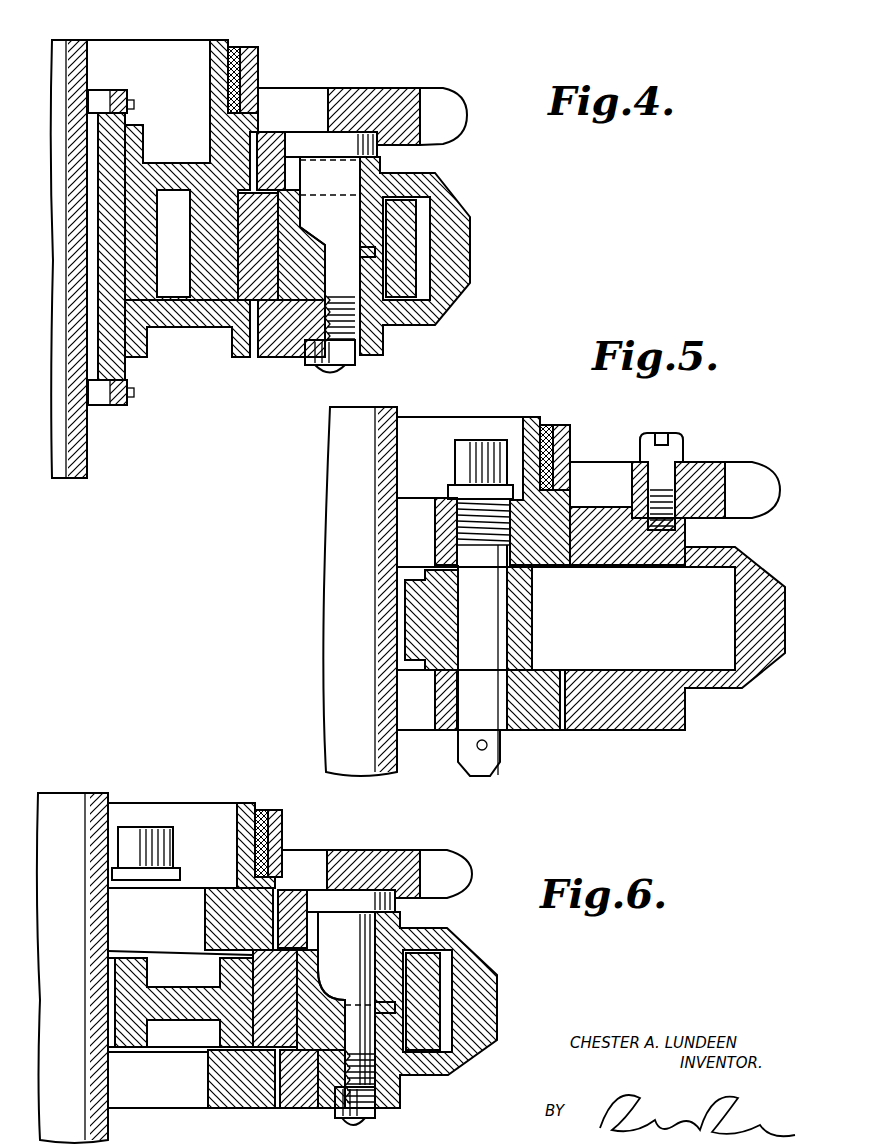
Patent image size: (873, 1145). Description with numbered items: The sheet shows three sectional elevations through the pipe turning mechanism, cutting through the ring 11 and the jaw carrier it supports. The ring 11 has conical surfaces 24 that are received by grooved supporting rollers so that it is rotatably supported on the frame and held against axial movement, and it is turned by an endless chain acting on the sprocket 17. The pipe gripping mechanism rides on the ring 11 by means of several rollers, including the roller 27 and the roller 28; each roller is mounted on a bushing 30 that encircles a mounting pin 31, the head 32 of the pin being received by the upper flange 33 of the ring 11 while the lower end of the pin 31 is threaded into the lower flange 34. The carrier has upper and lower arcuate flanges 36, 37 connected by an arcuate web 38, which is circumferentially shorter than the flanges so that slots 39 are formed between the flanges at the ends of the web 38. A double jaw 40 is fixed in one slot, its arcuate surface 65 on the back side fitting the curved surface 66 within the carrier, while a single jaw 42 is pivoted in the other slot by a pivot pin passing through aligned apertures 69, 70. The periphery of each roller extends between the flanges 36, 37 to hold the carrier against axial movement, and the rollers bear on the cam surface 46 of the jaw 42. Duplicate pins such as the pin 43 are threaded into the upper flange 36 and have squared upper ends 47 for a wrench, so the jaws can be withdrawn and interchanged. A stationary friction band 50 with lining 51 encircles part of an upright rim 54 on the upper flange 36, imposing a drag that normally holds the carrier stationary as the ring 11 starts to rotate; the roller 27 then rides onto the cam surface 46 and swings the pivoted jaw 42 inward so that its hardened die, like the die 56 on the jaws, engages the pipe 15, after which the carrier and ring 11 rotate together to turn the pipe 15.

In FIG. 4, the ring 11 is at (456, 286).
In FIG. 5, the ring 11 is at (770, 627).
In FIG. 6, the ring 11 is at (486, 1008).
In FIG. 4, the pipe 15 is at (80, 471).
In FIG. 5, the pipe 15 is at (385, 412).
In FIG. 6, the pipe 15 is at (97, 801).
In FIG. 4, the sprocket 17 is at (450, 100).
In FIG. 5, the sprocket 17 is at (760, 472).
In FIG. 6, the sprocket 17 is at (456, 867).
In FIG. 6, the conical surfaces 24 is at (448, 949).
In FIG. 6, the roller 27 is at (430, 968).
In FIG. 4, the roller 28 is at (413, 296).
In FIG. 4, the bushing 30 is at (370, 232).
In FIG. 6, the bushing 30 is at (396, 1050).
In FIG. 4, the mounting pin 31 is at (346, 178).
In FIG. 6, the mounting pin 31 is at (330, 1090).
In FIG. 4, the head 32 is at (342, 138).
In FIG. 6, the head 32 is at (356, 900).
In FIG. 4, the upper flange 33 is at (268, 146).
In FIG. 5, the upper flange 33 is at (655, 565).
In FIG. 6, the upper flange 33 is at (290, 896).
In FIG. 4, the lower flange 34 is at (278, 350).
In FIG. 5, the lower flange 34 is at (672, 670).
In FIG. 6, the lower flange 34 is at (295, 1096).
In FIG. 4, the upper arcuate flange 36 is at (243, 140).
In FIG. 5, the upper arcuate flange 36 is at (553, 514).
In FIG. 6, the upper arcuate flange 36 is at (222, 892).
In FIG. 4, the lower arcuate flange 37 is at (243, 348).
In FIG. 5, the lower arcuate flange 37 is at (548, 722).
In FIG. 6, the lower arcuate flange 37 is at (232, 1096).
In FIG. 4, the arcuate web 38 is at (210, 238).
In FIG. 5, the slots 39 is at (550, 670).
In FIG. 6, the slots 39 is at (200, 1050).
In FIG. 4, the double jaw 40 is at (150, 300).
In FIG. 5, the single jaw 42 is at (536, 626).
In FIG. 6, the single jaw 42 is at (114, 982).
In FIG. 5, the pin 43 is at (496, 752).
In FIG. 6, the cam surface 46 is at (255, 973).
In FIG. 5, the squared upper end 47 is at (455, 452).
In FIG. 6, the squared upper end 47 is at (133, 830).
In FIG. 4, the friction band 50 is at (251, 60).
In FIG. 5, the friction band 50 is at (561, 428).
In FIG. 6, the friction band 50 is at (279, 826).
In FIG. 4, the lining 51 is at (236, 52).
In FIG. 5, the lining 51 is at (549, 445).
In FIG. 6, the lining 51 is at (263, 816).
In FIG. 4, the upright rim 54 is at (222, 46).
In FIG. 5, the upright rim 54 is at (532, 418).
In FIG. 6, the upright rim 54 is at (245, 806).
In FIG. 4, the hardened die 56 is at (106, 285).
In FIG. 4, the arcuate surface 65 is at (128, 168).
In FIG. 4, the curved surface 66 is at (122, 140).
In FIG. 5, the aperture 69 is at (445, 522).
In FIG. 5, the aperture 70 is at (500, 592).